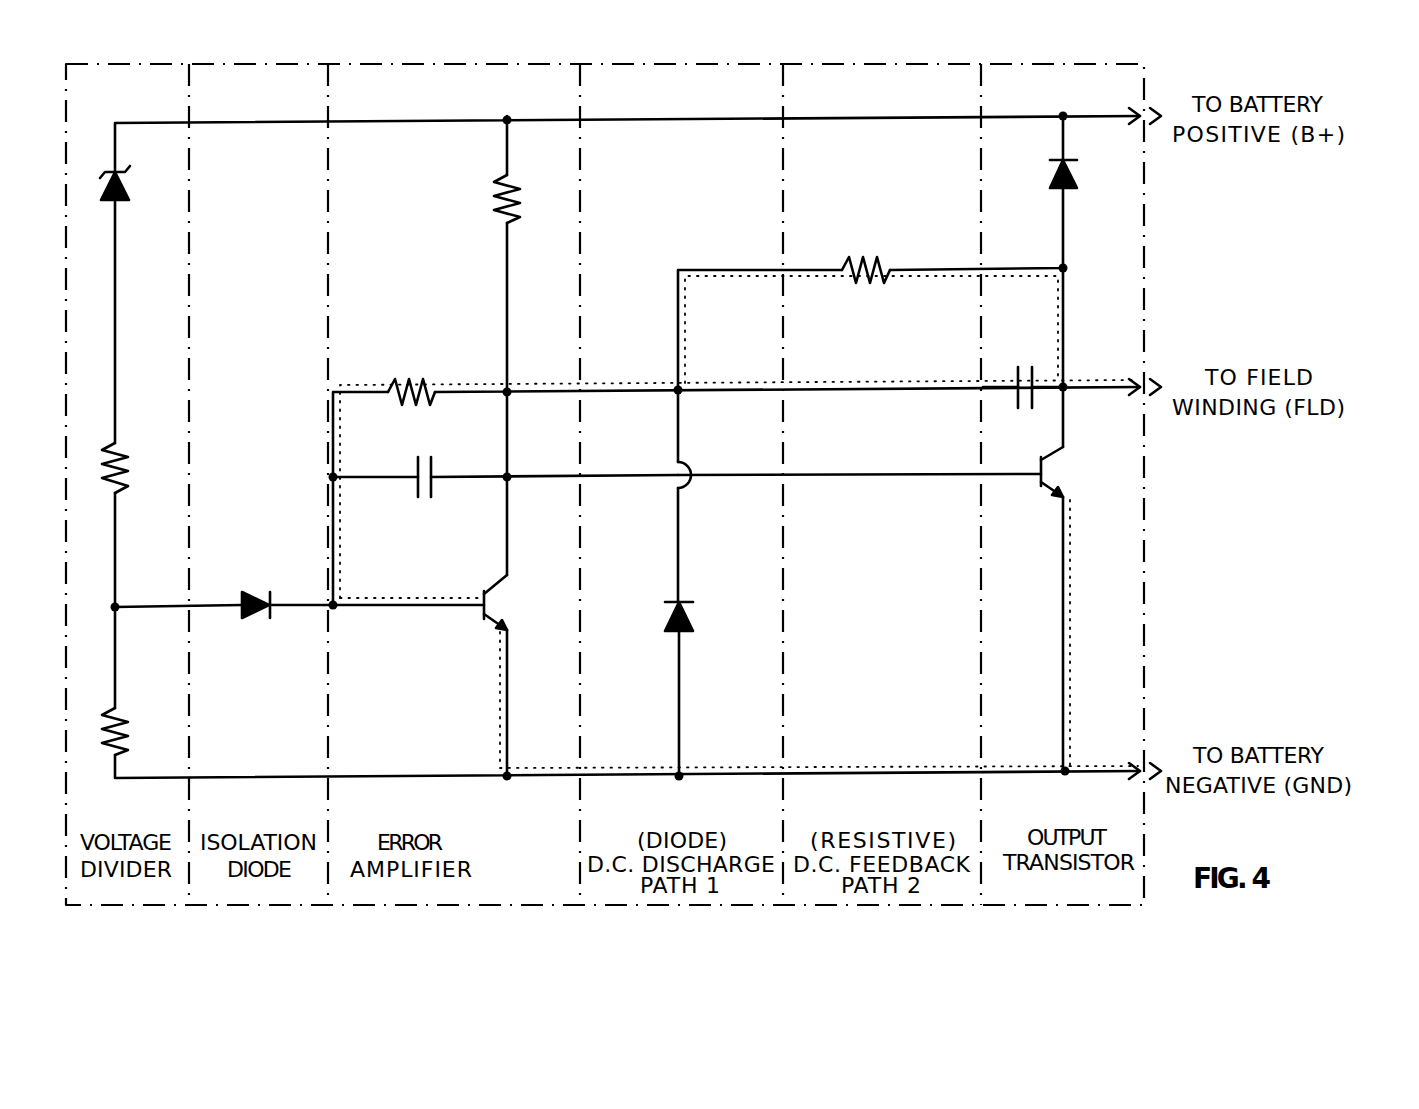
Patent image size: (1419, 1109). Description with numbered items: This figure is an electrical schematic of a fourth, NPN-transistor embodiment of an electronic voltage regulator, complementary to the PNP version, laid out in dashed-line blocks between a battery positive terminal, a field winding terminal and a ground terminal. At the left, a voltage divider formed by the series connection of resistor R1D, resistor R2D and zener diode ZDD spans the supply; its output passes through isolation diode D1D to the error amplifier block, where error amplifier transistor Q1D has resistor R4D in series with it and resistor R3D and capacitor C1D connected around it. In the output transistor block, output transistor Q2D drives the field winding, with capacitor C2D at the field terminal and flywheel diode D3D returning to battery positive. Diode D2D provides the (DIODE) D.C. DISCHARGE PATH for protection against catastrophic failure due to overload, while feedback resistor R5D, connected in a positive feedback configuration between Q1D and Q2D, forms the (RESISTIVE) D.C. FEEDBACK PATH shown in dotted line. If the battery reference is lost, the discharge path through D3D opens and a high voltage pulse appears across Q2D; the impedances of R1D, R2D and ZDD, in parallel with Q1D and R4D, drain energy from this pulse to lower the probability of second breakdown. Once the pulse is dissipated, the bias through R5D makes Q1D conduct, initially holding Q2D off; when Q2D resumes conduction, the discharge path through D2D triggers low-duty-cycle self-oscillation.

The zener diode ZDD is at (128, 190).
The resistor R2D is at (133, 460).
The resistor R1D is at (125, 712).
The isolation diode D1D is at (256, 592).
The resistor R3D is at (416, 380).
The capacitor C1D is at (434, 465).
The resistor R4D is at (522, 195).
The error amplifier transistor Q1D is at (505, 603).
The discharge diode D2D is at (693, 617).
The feedback resistor R5D is at (868, 258).
The flywheel diode D3D is at (1078, 170).
The capacitor C2D is at (1014, 372).
The output transistor Q2D is at (1055, 473).